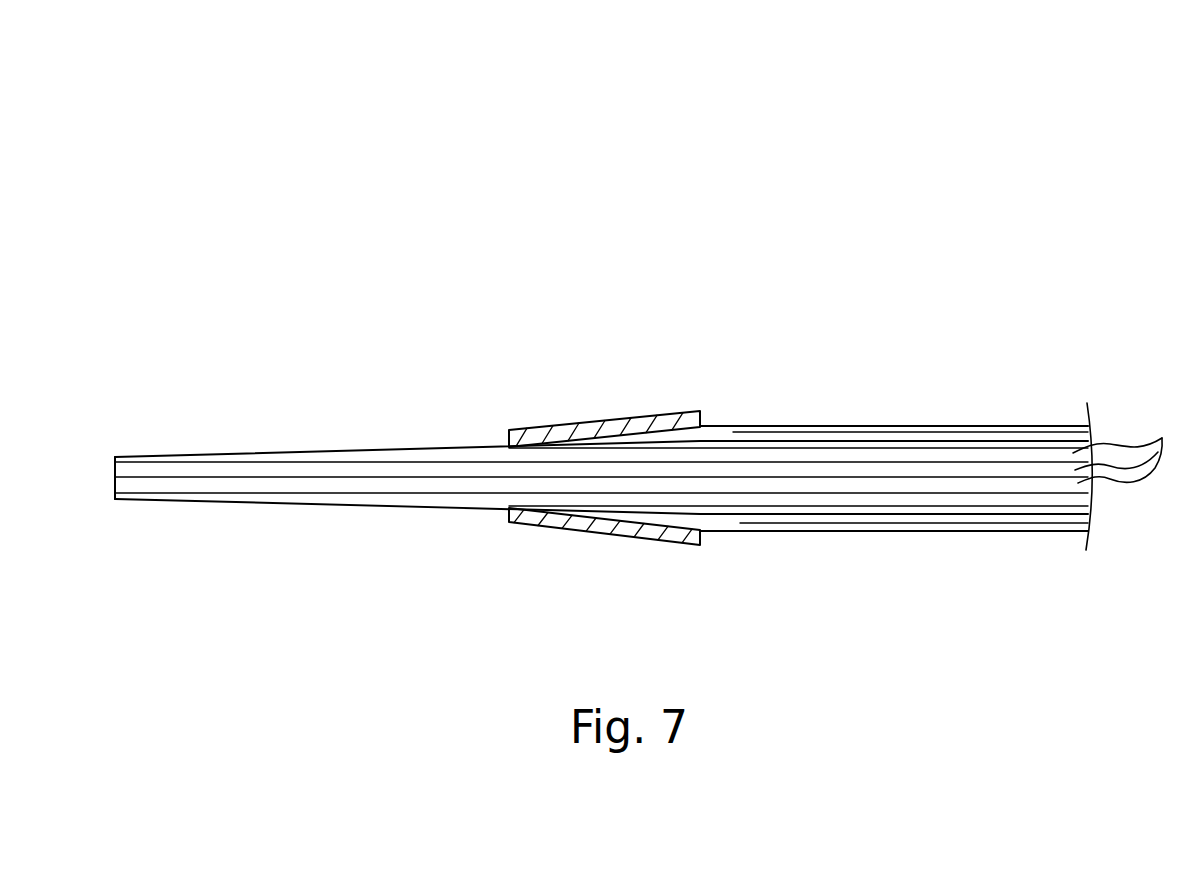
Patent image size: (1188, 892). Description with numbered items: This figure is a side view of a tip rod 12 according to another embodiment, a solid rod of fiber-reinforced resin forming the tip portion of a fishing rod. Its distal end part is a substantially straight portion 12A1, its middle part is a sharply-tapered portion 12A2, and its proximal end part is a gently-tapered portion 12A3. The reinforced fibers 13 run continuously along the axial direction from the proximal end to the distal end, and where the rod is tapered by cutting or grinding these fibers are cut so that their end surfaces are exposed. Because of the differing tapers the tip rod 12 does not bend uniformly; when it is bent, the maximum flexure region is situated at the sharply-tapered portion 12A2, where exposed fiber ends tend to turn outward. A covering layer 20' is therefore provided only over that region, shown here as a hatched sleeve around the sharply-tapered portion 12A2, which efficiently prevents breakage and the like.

The tip rod 12 is at (713, 234).
The substantially straight portion 12A1 is at (345, 452).
The sharply-tapered portion 12A2 is at (604, 457).
The gently-tapered portion 12A3 is at (887, 425).
The covering layer 20' is at (633, 409).
The reinforced fibers 13 is at (1129, 437).